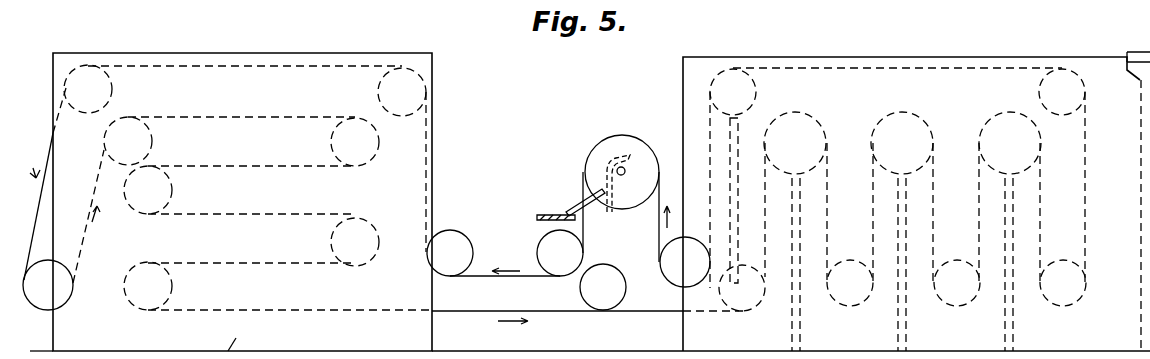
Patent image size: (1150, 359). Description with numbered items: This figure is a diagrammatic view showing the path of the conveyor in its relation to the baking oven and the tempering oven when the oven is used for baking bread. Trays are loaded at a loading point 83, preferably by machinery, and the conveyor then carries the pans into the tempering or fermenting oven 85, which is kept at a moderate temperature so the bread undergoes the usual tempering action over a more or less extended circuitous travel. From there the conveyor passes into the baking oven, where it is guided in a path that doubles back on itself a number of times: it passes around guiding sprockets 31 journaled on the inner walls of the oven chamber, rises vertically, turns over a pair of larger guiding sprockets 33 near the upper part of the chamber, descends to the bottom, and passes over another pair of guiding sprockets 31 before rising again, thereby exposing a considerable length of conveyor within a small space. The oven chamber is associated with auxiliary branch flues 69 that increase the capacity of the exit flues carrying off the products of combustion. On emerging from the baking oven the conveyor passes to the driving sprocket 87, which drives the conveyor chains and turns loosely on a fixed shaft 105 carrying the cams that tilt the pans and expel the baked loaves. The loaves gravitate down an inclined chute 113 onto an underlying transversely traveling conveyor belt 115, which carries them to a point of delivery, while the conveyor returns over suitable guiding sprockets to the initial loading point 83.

The tempering oven 85 is at (237, 46).
The loading point 83 is at (42, 311).
The driving sprocket 87 is at (647, 145).
The fixed shaft 105 is at (626, 176).
The inclined chute 113 is at (580, 202).
The conveyor belt 115 is at (538, 218).
The auxiliary branch flue 69 is at (940, 57).
The guiding sprocket 31 is at (758, 91).
The larger guiding sprocket 33 is at (806, 120).